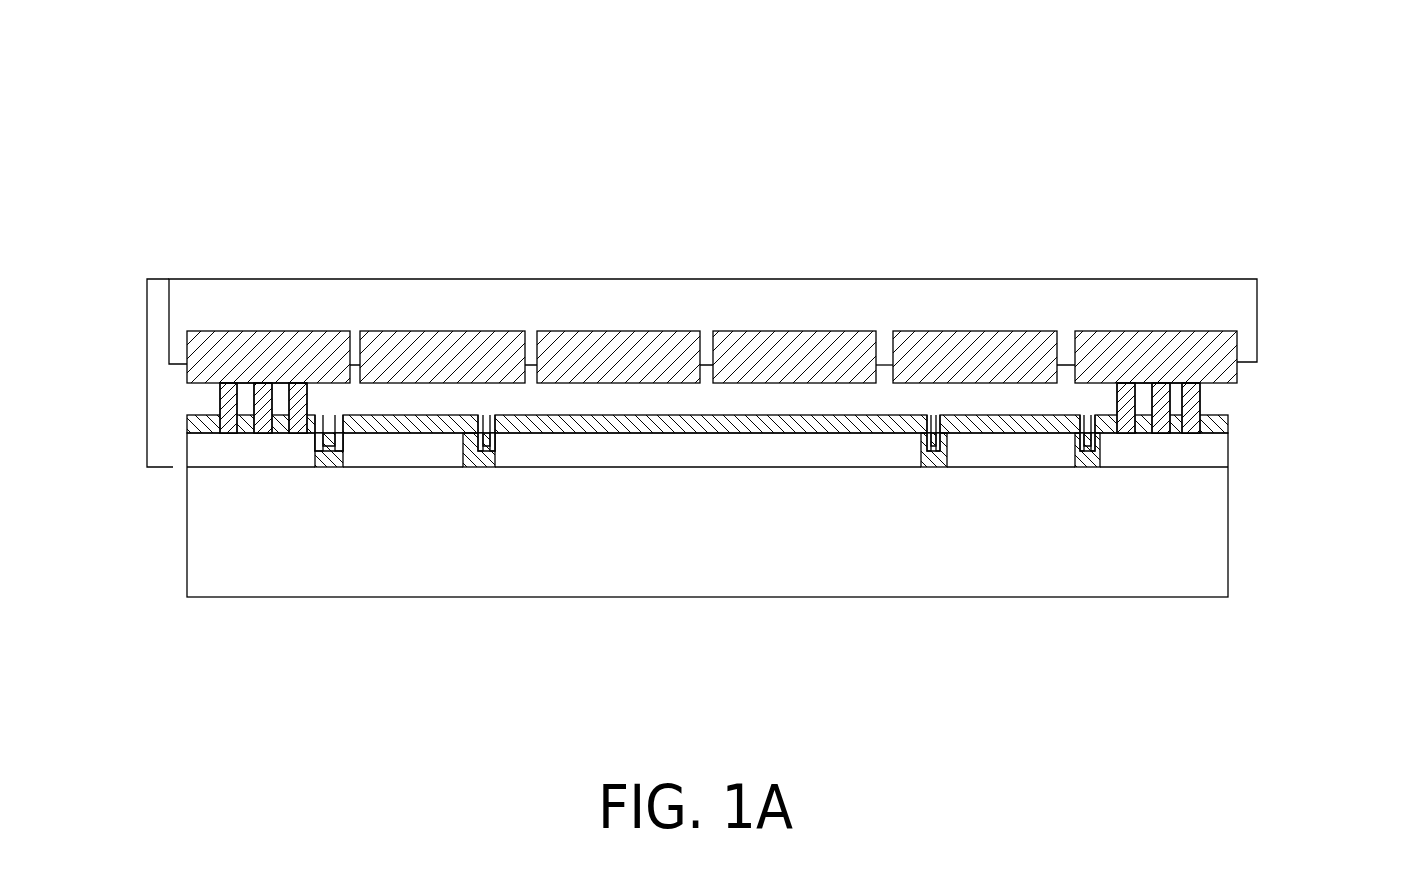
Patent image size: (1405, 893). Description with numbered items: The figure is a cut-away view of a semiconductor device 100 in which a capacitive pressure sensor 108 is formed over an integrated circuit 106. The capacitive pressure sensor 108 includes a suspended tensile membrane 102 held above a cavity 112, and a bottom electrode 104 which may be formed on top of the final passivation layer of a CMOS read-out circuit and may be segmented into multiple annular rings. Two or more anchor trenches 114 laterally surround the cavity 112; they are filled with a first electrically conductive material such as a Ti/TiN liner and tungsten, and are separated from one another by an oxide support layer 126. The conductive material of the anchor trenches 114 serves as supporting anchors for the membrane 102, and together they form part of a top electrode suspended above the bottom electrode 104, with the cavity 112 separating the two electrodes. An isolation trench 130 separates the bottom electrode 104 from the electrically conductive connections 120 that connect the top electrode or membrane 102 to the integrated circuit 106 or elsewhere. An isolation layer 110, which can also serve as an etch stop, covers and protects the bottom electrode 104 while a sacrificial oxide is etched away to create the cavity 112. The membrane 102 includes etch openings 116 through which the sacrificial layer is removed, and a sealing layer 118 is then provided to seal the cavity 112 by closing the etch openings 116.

The semiconductor device 100 is at (466, 140).
The suspended tensile membrane 102 is at (758, 331).
The bottom electrode 104 is at (960, 467).
The integrated circuit 106 is at (310, 597).
The capacitive pressure sensor 108 is at (146, 372).
The isolation layer 110 is at (742, 437).
The cavity 112 is at (789, 378).
The anchor trenches 114 is at (300, 383).
The etch openings 116 is at (884, 322).
The sealing layer 118 is at (938, 278).
The electrically conductive connections 120 is at (222, 468).
The oxide support layer 126 is at (248, 405).
The isolation trench 130 is at (1087, 467).